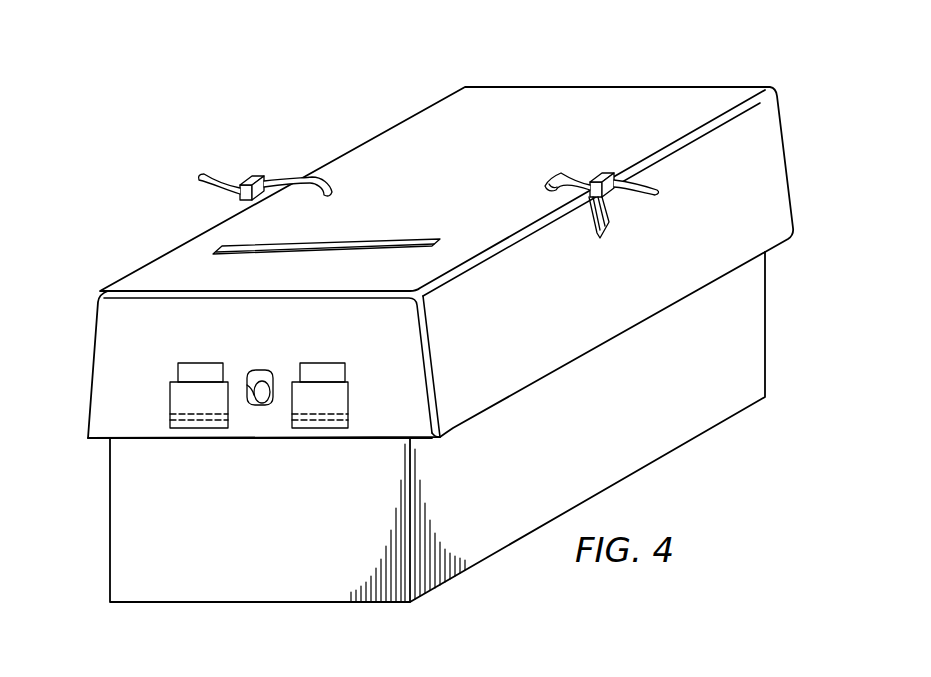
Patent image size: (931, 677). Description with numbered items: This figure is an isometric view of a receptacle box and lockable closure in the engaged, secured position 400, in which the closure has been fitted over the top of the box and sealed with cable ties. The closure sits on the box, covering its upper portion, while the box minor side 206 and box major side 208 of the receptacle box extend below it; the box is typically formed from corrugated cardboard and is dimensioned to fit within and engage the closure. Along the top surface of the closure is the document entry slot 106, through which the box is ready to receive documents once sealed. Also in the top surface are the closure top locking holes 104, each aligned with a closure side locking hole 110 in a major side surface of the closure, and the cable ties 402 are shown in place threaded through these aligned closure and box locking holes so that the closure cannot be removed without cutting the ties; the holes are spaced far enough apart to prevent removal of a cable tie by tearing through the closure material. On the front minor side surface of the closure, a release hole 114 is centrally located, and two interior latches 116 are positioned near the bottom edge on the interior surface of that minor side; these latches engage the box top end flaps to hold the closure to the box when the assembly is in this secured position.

The engaged, secured position 400 is at (304, 97).
The cable tie 402 is at (260, 176).
The closure top locking hole 104 is at (547, 188).
The document entry slot 106 is at (344, 243).
The closure side locking hole 110 is at (601, 236).
The release hole 114 is at (261, 369).
The interior latch 116 is at (203, 422).
The box minor side 206 is at (121, 510).
The box major side 208 is at (702, 427).